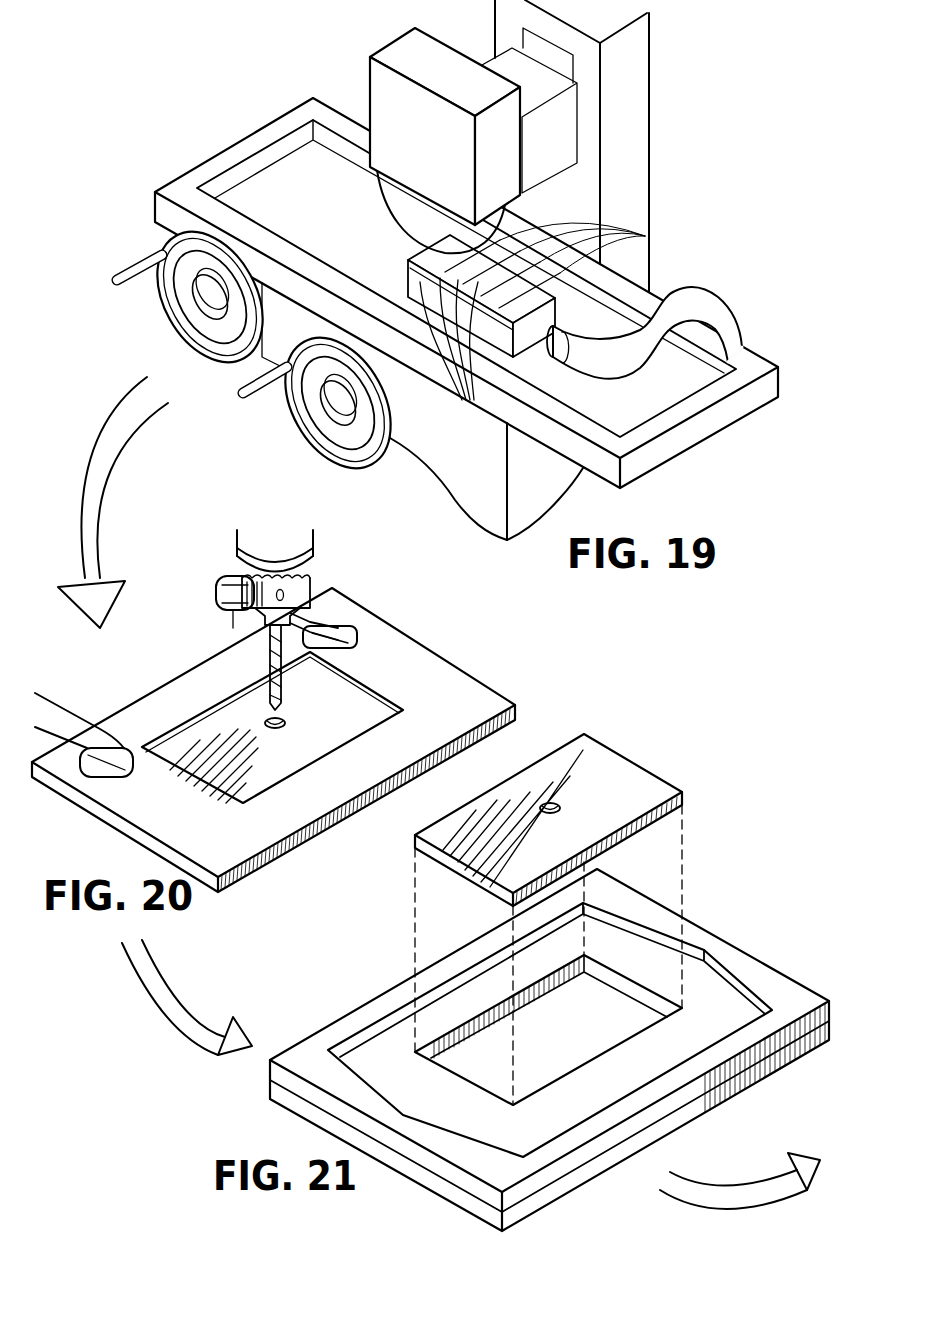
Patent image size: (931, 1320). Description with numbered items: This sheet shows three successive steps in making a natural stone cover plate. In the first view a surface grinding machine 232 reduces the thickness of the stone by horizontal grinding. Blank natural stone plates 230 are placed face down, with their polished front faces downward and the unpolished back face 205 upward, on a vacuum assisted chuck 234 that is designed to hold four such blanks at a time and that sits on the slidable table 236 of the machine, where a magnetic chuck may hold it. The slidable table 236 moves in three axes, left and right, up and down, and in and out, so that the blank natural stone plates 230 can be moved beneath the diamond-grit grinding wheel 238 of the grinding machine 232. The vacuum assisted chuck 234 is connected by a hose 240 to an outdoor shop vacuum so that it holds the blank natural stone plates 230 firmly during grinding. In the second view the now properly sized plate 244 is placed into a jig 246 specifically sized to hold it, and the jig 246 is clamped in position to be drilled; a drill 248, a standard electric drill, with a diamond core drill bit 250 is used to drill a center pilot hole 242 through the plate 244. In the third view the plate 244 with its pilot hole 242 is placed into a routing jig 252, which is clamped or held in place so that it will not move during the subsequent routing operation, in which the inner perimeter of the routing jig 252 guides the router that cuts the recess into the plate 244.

In FIG. 19, the surface grinding machine 232 is at (112, 165).
In FIG. 19, the grinding wheel 238 is at (393, 200).
In FIG. 19, the back face 205 is at (645, 237).
In FIG. 20, the back face 205 is at (335, 737).
In FIG. 21, the back face 205 is at (614, 806).
In FIG. 19, the vacuum assisted chuck 234 is at (600, 312).
In FIG. 19, the hose 240 is at (722, 297).
In FIG. 19, the blank natural stone plates 230 is at (460, 400).
In FIG. 19, the slidable table 236 is at (668, 448).
In FIG. 20, the drill 248 is at (315, 547).
In FIG. 20, the drill bit 250 is at (270, 648).
In FIG. 20, the center pilot hole 242 is at (253, 717).
In FIG. 20, the plate 244 is at (341, 697).
In FIG. 21, the plate 244 is at (628, 772).
In FIG. 20, the jig 246 is at (518, 665).
In FIG. 21, the routing jig 252 is at (727, 938).